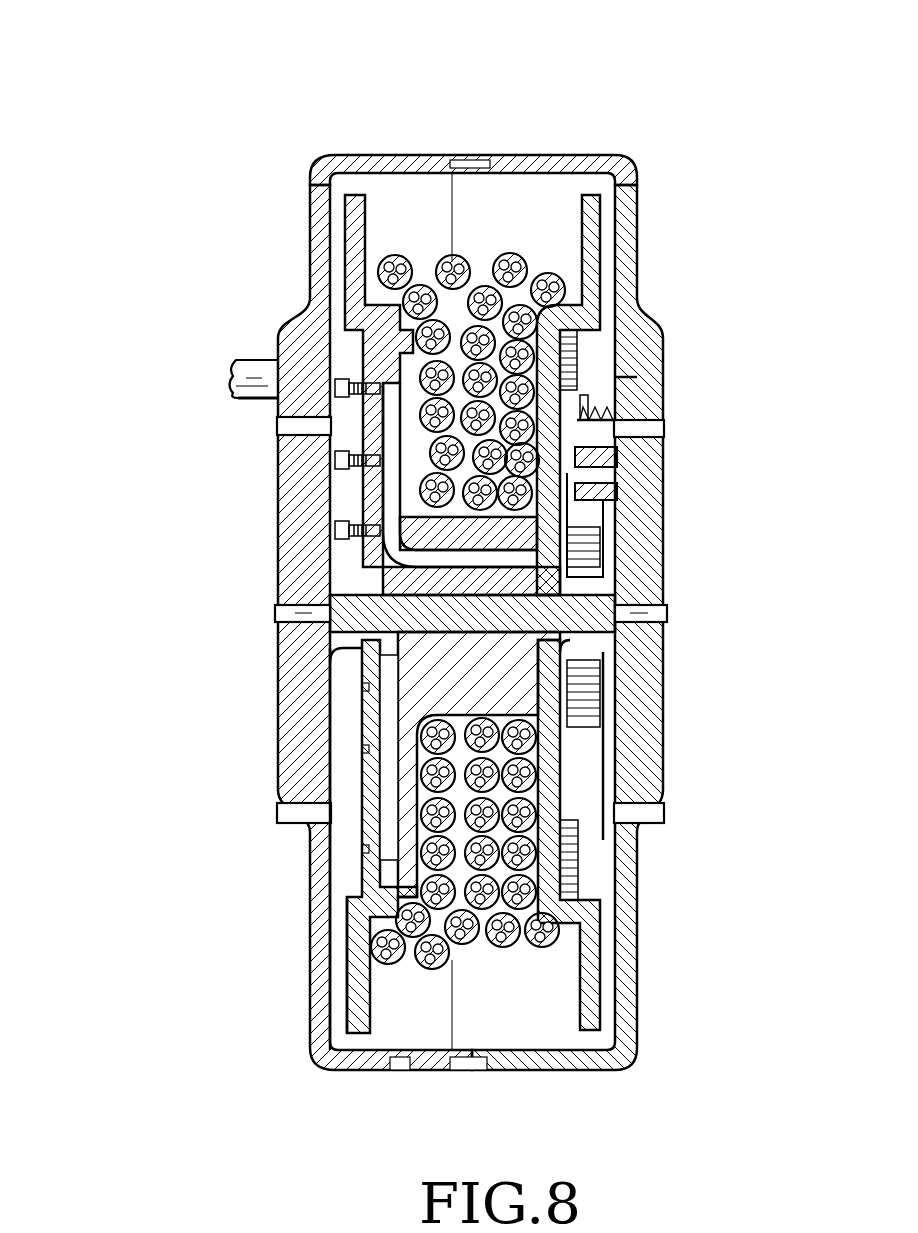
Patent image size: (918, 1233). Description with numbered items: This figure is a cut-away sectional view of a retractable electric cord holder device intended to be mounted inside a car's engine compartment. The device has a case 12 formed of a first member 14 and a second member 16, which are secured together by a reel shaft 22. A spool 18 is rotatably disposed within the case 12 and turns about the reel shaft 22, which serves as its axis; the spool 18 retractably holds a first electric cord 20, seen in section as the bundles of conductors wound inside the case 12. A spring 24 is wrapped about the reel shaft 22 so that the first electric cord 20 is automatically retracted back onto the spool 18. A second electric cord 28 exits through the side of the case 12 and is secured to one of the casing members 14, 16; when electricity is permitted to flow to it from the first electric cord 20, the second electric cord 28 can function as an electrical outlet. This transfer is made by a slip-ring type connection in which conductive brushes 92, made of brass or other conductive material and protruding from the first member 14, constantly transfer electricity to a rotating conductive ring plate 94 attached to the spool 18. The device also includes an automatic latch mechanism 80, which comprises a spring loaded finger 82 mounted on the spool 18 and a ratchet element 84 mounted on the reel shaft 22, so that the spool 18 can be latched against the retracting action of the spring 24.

The case 12 is at (471, 535).
The first member 14 is at (310, 205).
The second member 16 is at (637, 232).
The spool 18 is at (393, 770).
The first electric cord 20 is at (513, 960).
The reel shaft 22 is at (622, 637).
The spring 24 is at (595, 748).
The second electric cord 28 is at (210, 368).
The automatic latch mechanism 80 is at (632, 408).
The spring loaded finger 82 is at (585, 405).
The ratchet element 84 is at (584, 400).
The conductive brushes 92 is at (355, 508).
The conductive ring plate 94 is at (352, 675).